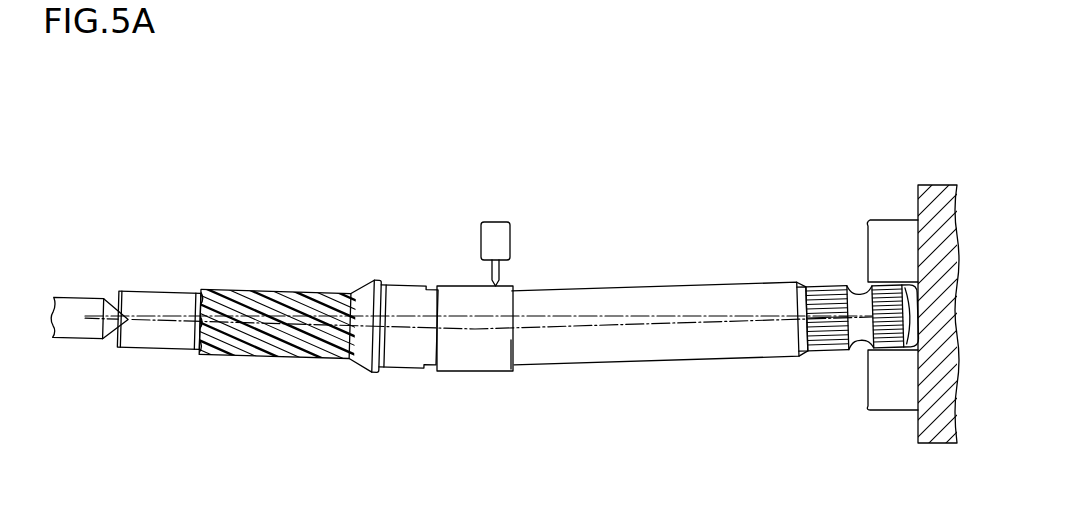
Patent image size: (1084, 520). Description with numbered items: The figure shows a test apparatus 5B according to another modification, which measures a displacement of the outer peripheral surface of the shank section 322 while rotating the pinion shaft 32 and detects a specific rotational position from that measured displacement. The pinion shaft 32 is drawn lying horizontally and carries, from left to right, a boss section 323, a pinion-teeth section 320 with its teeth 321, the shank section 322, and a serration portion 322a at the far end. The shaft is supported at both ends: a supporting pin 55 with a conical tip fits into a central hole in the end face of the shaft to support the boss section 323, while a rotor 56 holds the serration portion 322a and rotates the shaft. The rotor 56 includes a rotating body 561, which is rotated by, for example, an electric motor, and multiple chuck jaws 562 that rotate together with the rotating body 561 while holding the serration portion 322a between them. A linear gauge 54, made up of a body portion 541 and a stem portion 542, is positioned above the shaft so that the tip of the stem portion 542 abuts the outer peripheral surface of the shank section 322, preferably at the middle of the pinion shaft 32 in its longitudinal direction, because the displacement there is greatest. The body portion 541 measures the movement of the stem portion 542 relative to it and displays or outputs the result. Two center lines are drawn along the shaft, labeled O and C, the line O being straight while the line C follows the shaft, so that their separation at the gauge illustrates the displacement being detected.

The test apparatus 5B is at (133, 192).
The pinion shaft 32 is at (733, 293).
The pinion-teeth section 320 is at (225, 283).
The gear teeth 321 is at (305, 354).
The shank section 322 is at (597, 302).
The serration portion 322a is at (457, 286).
The boss section 323 is at (175, 340).
The linear gauge 54 is at (577, 195).
The body portion 541 is at (510, 228).
The stem portion 542 is at (499, 272).
The supporting pin 55 is at (78, 297).
The rotor 56 is at (885, 195).
The rotating body 561 is at (920, 423).
The chuck jaws 562 is at (873, 237).
The rotation axis O is at (462, 317).
The shaft center axis C is at (492, 330).